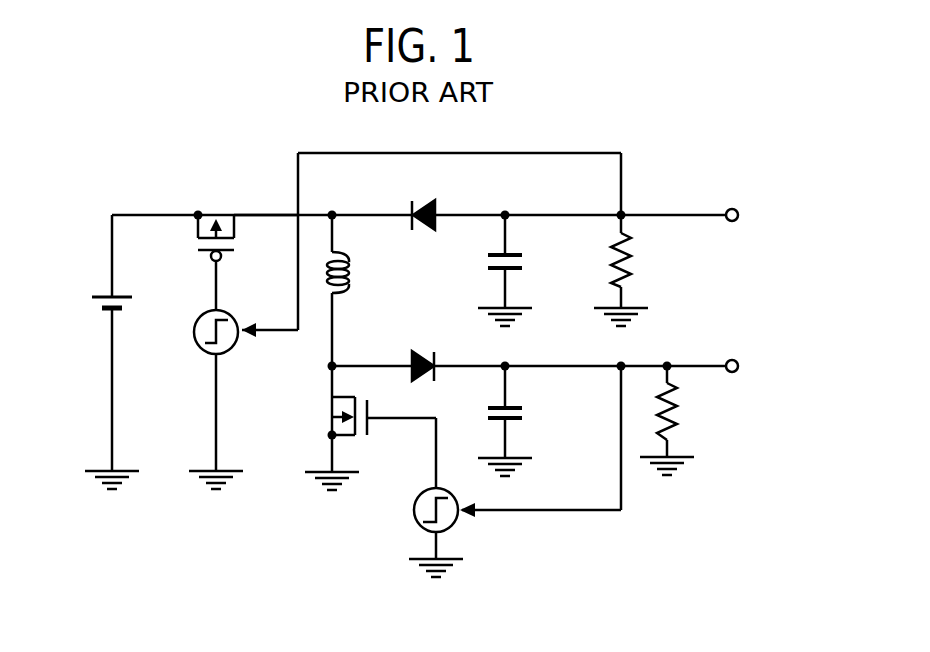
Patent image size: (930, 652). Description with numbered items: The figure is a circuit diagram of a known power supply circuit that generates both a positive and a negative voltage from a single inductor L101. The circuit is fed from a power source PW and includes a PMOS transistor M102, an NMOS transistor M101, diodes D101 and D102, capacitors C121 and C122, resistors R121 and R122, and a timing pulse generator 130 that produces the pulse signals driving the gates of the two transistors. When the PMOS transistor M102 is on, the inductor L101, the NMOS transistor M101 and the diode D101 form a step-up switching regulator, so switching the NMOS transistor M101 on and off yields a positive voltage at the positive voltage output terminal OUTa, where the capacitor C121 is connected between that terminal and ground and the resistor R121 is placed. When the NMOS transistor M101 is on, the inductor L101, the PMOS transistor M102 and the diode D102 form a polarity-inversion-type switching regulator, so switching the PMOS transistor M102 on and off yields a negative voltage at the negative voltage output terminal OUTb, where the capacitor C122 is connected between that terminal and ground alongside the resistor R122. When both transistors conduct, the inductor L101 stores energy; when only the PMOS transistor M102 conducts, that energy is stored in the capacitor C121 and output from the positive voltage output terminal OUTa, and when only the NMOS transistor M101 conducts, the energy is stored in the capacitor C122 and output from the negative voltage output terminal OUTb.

The timing pulse generator 130 is at (194, 336).
The power supply PW is at (108, 352).
The PMOS transistor M102 is at (217, 246).
The NMOS transistor M101 is at (356, 443).
The inductor L101 is at (362, 272).
The diode D102 is at (421, 200).
The diode D101 is at (421, 349).
The capacitor C122 is at (529, 290).
The capacitor C121 is at (529, 440).
The resistor R122 is at (640, 279).
The resistor R121 is at (686, 429).
The negative voltage output terminal OUTb is at (734, 202).
The positive voltage output terminal OUTa is at (733, 353).